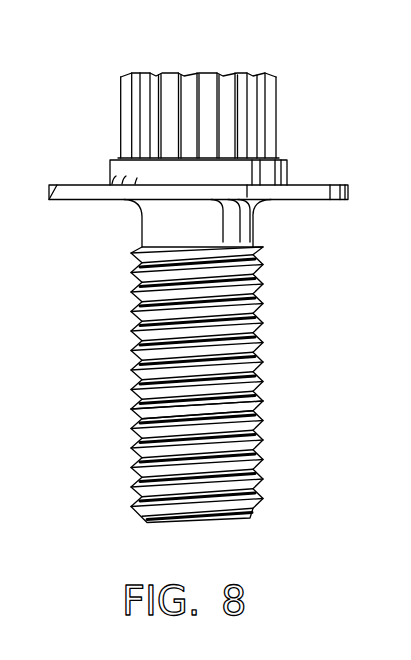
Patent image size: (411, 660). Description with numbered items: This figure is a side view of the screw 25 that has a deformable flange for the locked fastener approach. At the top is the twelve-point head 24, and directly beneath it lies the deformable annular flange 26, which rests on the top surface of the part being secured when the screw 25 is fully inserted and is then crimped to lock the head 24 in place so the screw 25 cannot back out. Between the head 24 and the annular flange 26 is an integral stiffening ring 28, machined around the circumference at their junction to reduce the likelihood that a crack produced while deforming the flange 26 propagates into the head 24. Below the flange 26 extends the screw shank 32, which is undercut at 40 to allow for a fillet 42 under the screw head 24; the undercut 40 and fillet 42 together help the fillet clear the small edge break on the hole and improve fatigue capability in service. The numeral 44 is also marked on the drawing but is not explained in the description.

The splined head 24 is at (122, 128).
The collar 28 is at (288, 166).
The flange 26 is at (50, 200).
The shank 40 is at (197, 237).
The thread runout grooves 42 is at (258, 203).
The threaded portion 32 is at (133, 353).
The thread 25 is at (276, 417).
The thread crest 44 is at (408, 337).